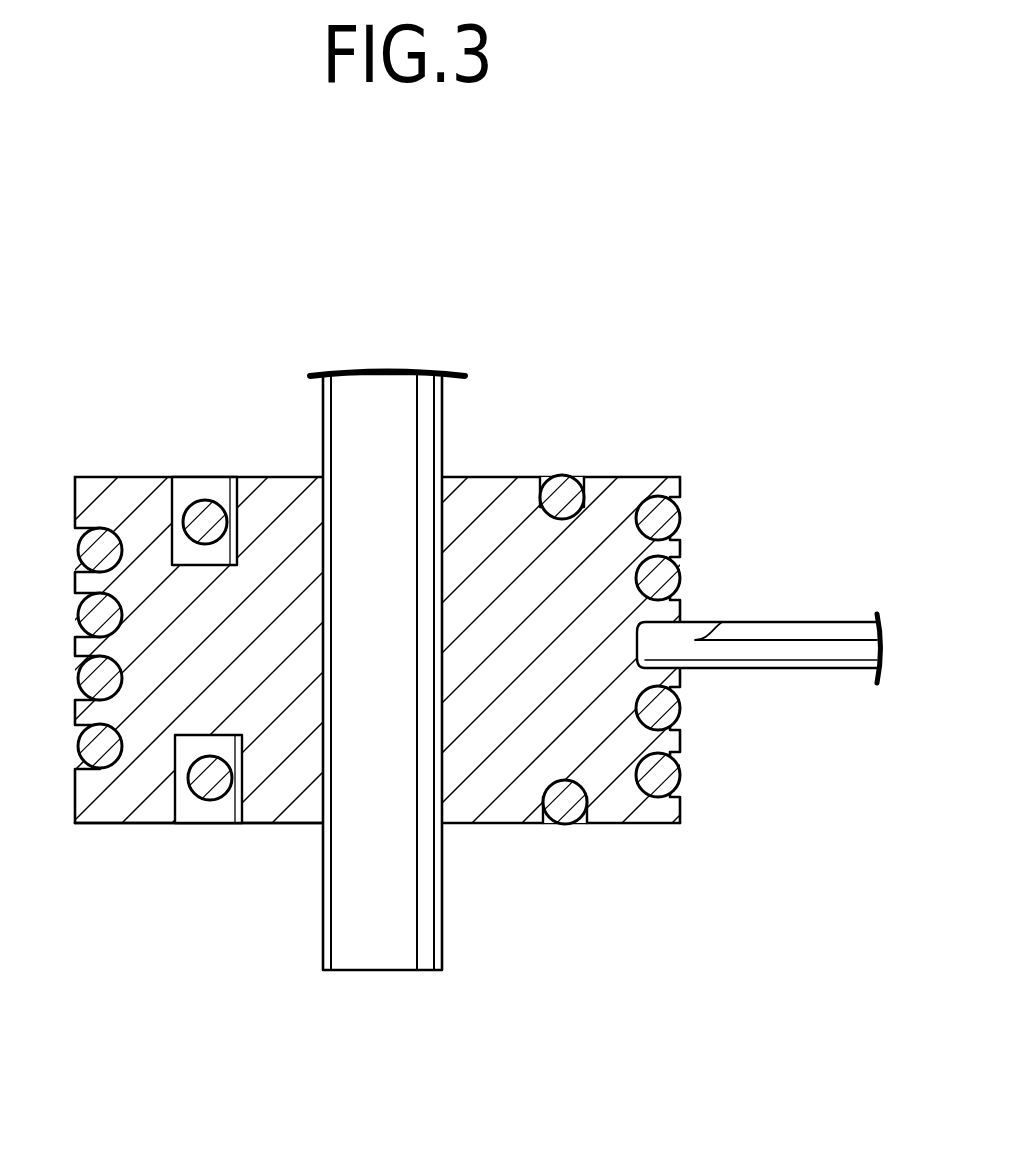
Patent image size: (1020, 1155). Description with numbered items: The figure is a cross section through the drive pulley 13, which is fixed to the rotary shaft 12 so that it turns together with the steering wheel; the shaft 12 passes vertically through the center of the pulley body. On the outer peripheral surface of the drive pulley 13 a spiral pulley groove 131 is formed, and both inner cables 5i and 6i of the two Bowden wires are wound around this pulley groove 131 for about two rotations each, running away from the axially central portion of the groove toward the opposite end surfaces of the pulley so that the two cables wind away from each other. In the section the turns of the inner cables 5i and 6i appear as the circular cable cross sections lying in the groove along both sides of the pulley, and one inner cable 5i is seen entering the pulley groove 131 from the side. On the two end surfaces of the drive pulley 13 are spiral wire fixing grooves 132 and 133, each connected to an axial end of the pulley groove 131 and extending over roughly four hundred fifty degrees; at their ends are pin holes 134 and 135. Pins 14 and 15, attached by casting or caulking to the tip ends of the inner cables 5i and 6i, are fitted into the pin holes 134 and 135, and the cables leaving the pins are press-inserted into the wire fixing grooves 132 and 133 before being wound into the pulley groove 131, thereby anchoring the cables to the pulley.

The rotary shaft 12 is at (377, 397).
The drive pulley 13 is at (478, 459).
The pulley groove 131 is at (720, 622).
The wire fixing groove 132 is at (575, 497).
The wire fixing groove 133 is at (560, 800).
The pin hole 134 is at (233, 494).
The pin hole 135 is at (238, 803).
The pin 14 is at (160, 496).
The pin 15 is at (173, 768).
The inner cable 5i is at (787, 640).
The inner cable 6i is at (660, 767).